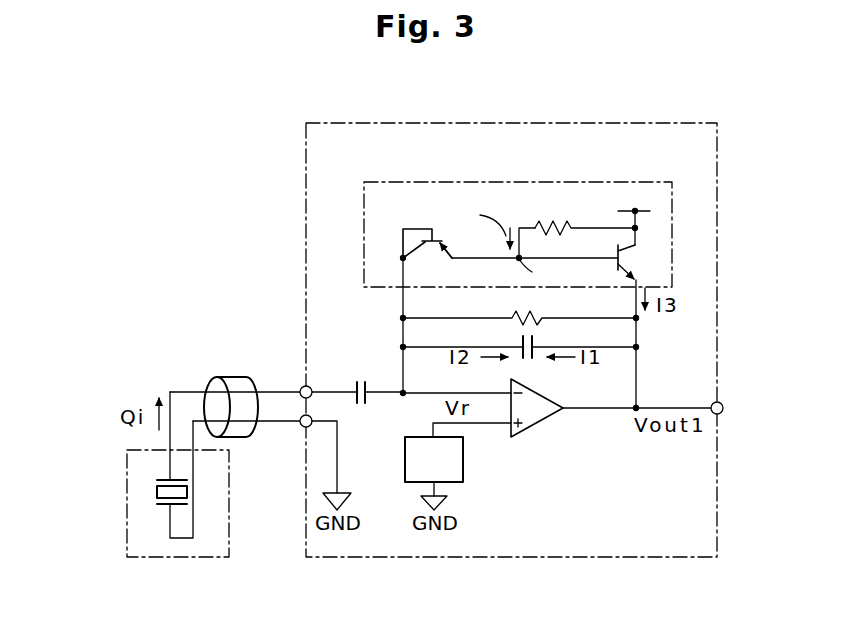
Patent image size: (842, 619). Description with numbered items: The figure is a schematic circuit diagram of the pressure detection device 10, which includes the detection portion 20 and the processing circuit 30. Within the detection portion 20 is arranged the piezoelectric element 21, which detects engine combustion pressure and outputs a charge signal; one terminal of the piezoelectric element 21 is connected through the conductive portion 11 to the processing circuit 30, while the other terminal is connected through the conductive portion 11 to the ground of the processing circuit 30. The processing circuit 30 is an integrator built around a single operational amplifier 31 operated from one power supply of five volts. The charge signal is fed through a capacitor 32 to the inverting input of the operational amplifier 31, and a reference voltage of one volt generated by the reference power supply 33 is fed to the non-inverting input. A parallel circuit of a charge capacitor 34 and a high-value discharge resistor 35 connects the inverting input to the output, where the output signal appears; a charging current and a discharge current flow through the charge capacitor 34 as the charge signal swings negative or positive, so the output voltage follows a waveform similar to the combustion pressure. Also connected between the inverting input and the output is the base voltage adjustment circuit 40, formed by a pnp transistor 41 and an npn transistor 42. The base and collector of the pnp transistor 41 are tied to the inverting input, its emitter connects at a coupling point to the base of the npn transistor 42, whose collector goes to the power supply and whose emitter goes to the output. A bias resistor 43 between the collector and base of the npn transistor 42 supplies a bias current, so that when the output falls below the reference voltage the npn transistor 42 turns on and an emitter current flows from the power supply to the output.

The pressure detection device 10 is at (259, 170).
The conductive portion 11 is at (235, 378).
The detection portion 20 is at (234, 508).
The piezoelectric element 21 is at (163, 507).
The processing circuit 30 is at (305, 232).
The operational amplifier 31 is at (547, 424).
The capacitor 32 is at (356, 385).
The reference power supply 33 is at (463, 465).
The charge capacitor 34 is at (541, 344).
The discharge resistor 35 is at (540, 320).
The base voltage adjustment circuit 40 is at (483, 180).
The pnp transistor 41 is at (430, 248).
The npn transistor 42 is at (628, 268).
The bias resistor 43 is at (560, 226).